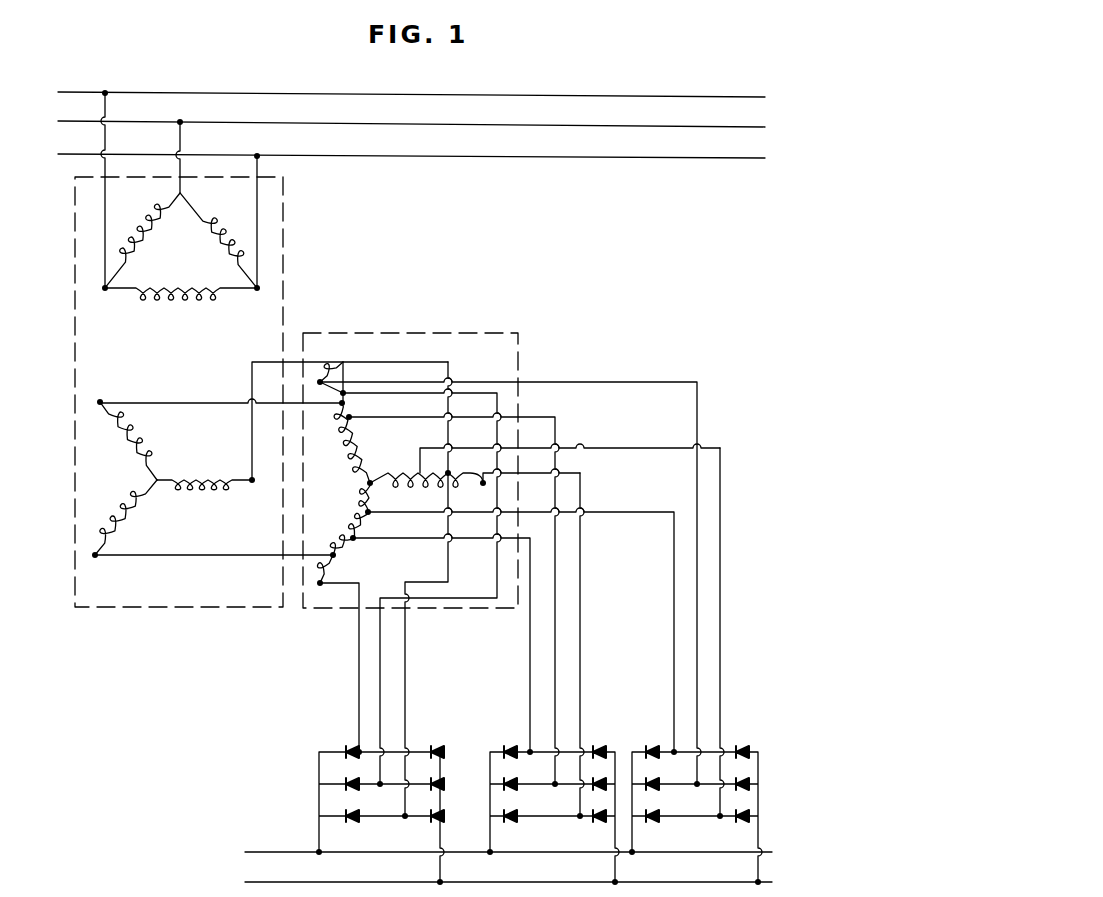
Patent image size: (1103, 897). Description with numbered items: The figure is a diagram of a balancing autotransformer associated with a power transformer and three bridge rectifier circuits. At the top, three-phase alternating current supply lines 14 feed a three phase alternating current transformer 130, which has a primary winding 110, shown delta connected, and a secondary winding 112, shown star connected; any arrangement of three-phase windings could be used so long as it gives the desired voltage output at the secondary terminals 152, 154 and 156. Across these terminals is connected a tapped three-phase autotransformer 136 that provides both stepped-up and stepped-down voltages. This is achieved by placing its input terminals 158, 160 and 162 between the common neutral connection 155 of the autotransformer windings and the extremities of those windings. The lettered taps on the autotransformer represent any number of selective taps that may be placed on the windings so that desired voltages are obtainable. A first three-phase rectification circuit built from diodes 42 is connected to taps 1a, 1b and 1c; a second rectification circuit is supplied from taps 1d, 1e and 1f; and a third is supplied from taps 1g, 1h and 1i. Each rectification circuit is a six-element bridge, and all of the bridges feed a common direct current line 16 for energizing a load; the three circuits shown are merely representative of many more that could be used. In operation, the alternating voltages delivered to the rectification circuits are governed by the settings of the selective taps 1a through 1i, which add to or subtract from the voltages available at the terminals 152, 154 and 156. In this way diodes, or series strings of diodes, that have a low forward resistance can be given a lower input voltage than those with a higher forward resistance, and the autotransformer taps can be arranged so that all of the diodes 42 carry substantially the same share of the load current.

The three-phase AC supply lines 14 is at (58, 158).
The three phase alternating current transformer 130 is at (75, 272).
The primary winding 110 is at (191, 276).
The secondary winding 112 is at (187, 518).
The terminal 154 is at (213, 389).
The terminal 152 is at (95, 558).
The terminal 156 is at (342, 439).
The tapped three-phase autotransformer 136 is at (440, 609).
The tap 1a is at (320, 586).
The tap 1b is at (344, 363).
The tap 1c is at (451, 474).
The tap 1d is at (355, 541).
The tap 1e is at (352, 419).
The tap 1f is at (484, 487).
The tap 1g is at (369, 515).
The tap 1h is at (334, 365).
The tap 1i is at (418, 472).
The common neutral connection 155 is at (368, 484).
The input terminal 158 is at (332, 553).
The input terminal 160 is at (345, 404).
The input terminal 162 is at (570, 460).
The diodes 42 is at (333, 814).
The common direct current line 16 is at (235, 881).